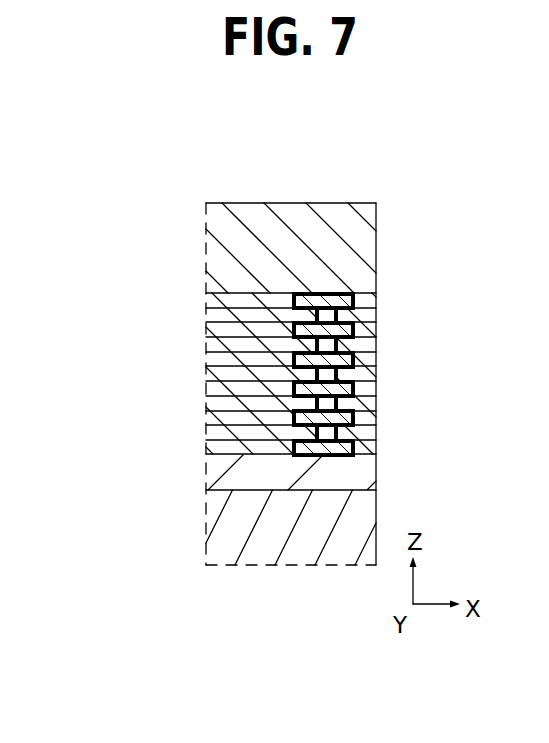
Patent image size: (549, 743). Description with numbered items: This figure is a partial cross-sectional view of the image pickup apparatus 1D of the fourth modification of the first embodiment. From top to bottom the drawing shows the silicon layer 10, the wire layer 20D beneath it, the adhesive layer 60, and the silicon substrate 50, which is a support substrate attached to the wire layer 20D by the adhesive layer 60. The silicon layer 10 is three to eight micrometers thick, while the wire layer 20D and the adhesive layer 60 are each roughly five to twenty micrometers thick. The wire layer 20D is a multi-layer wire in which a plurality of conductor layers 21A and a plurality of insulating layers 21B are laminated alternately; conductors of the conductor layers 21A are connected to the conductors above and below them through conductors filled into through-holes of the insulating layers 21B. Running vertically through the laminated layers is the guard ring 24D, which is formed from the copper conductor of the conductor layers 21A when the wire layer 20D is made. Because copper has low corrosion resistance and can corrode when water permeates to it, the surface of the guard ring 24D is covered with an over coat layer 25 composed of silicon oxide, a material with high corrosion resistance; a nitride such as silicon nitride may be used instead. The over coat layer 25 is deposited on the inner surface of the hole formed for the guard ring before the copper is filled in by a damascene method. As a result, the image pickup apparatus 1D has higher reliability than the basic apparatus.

The image pickup apparatus 1D is at (148, 160).
The silicon layer 10 is at (206, 251).
The wire layer 20D is at (108, 323).
The conductor layer 21A is at (206, 329).
The insulating layer 21B is at (206, 361).
The guard ring 24D is at (331, 292).
The over coat layer 25 is at (357, 303).
The adhesive layer 60 is at (207, 487).
The silicon substrate 50 is at (207, 529).